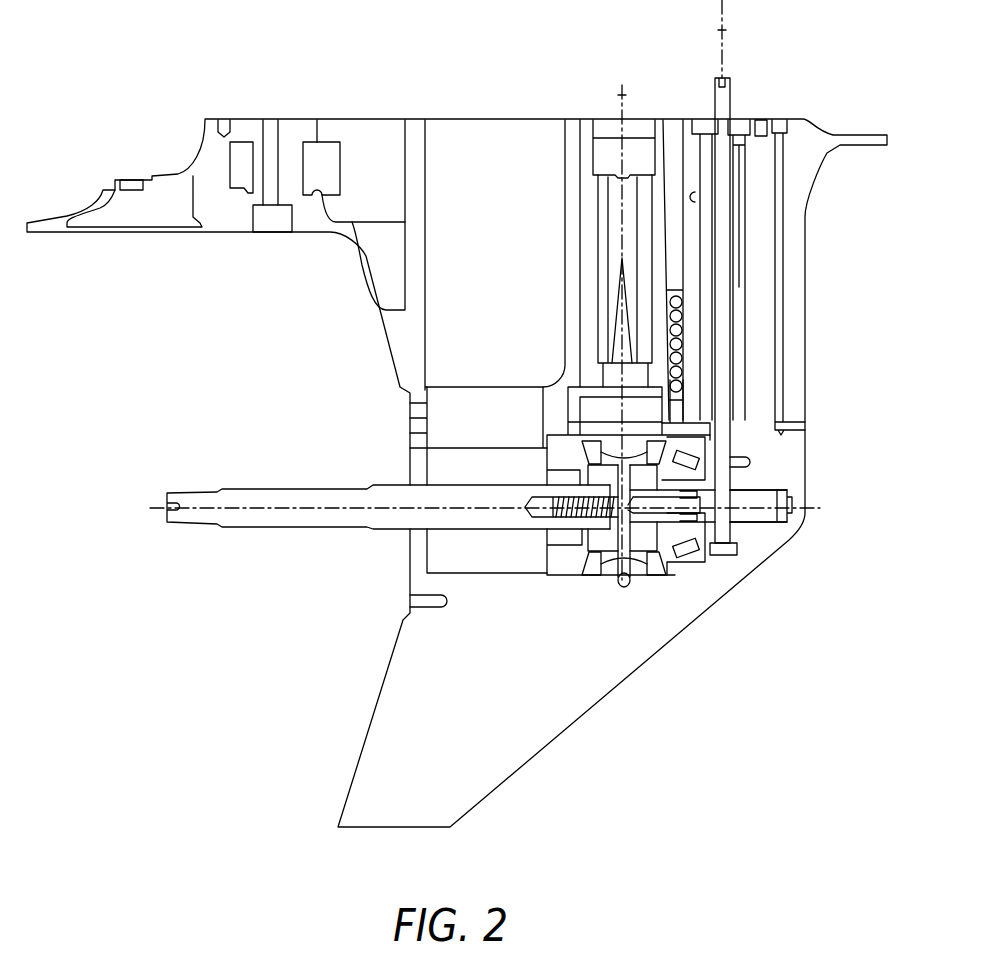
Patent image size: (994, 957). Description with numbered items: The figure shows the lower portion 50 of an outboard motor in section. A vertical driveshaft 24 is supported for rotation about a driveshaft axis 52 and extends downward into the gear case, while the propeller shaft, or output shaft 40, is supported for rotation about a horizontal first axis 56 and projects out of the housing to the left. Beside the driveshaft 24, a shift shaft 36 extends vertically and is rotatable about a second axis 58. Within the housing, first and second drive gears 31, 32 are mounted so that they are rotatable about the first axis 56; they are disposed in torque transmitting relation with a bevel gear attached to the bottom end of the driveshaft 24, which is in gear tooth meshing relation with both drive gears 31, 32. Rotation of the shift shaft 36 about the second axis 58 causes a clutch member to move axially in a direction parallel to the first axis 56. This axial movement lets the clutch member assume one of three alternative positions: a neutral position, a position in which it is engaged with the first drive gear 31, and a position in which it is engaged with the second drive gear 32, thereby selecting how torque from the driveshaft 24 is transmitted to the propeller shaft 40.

The lower portion 50 is at (196, 88).
The driveshaft 24 is at (600, 188).
The driveshaft axis 52 is at (622, 92).
The second axis 58 is at (723, 31).
The shift shaft 36 is at (730, 103).
The first axis 56 is at (273, 508).
The propeller shaft 40 is at (257, 518).
The first drive gear 31 is at (583, 563).
The second drive gear 32 is at (660, 558).